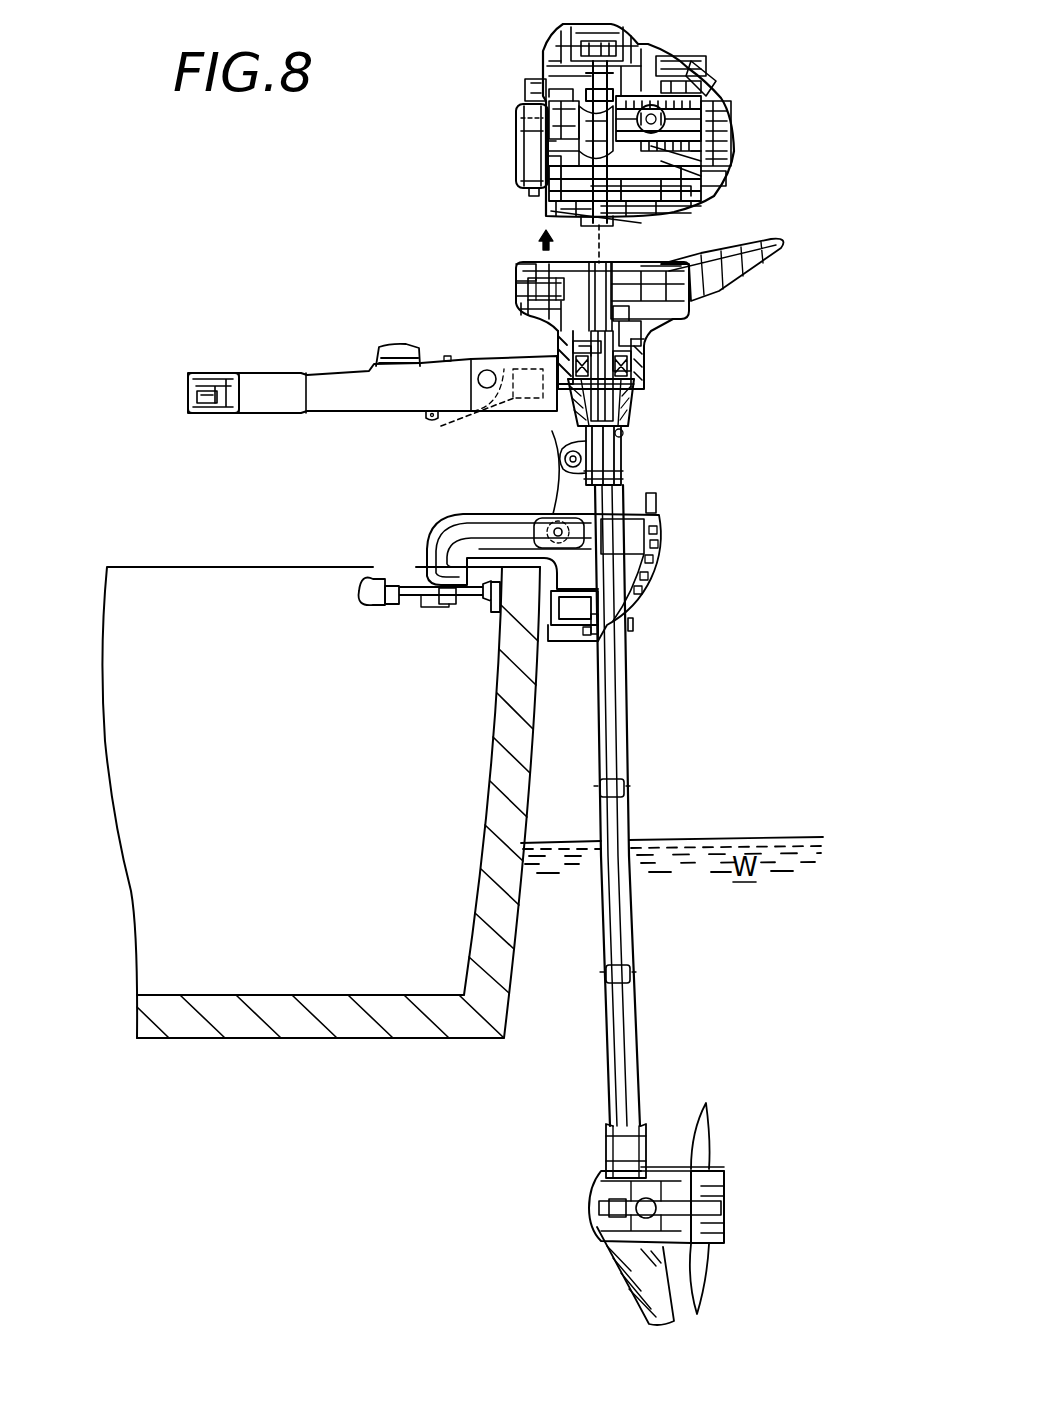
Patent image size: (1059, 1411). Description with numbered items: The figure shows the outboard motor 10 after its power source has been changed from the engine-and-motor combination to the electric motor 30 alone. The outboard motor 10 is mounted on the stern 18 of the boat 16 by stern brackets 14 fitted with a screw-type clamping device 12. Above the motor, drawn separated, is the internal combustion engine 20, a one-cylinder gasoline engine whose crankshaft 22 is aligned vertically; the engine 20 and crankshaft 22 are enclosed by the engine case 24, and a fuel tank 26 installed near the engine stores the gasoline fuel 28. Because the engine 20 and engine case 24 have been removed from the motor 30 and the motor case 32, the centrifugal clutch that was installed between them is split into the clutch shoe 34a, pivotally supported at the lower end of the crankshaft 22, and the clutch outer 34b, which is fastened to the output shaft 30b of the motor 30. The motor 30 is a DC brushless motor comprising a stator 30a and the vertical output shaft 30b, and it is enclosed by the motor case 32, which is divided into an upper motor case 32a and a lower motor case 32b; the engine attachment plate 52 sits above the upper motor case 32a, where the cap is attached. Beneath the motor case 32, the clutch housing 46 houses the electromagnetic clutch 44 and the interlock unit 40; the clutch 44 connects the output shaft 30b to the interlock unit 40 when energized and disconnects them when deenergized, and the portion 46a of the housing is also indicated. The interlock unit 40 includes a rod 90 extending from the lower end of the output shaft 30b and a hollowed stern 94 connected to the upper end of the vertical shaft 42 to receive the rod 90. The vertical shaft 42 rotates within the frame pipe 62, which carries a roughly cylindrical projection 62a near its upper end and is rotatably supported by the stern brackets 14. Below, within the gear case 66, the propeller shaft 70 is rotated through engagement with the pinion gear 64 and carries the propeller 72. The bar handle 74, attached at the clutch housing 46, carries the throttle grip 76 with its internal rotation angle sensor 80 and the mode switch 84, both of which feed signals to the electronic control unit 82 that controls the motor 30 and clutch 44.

The outboard motor 10 is at (715, 62).
The screw-type clamping device 12 is at (397, 602).
The stern bracket 14 is at (472, 513).
The boat 16 is at (309, 804).
The stern 18 is at (522, 728).
The internal combustion engine 20 is at (712, 100).
The crankshaft 22 is at (640, 205).
The engine case 24 is at (645, 50).
The fuel tank 26 is at (519, 98).
The gasoline fuel 28 is at (517, 150).
The electric motor 30 is at (690, 292).
The stator 30a is at (532, 261).
The output shaft 30b is at (636, 312).
The motor case 32 is at (445, 292).
The upper motor case 32a is at (527, 277).
The lower motor case 32b is at (520, 306).
The clutch shoe 34a is at (620, 218).
The clutch outer 34b is at (648, 257).
The interlock unit 40 is at (625, 405).
The vertical shaft 42 is at (627, 820).
The electromagnetic clutch 44 is at (630, 365).
The clutch housing 46 is at (645, 398).
The swivel case flange 46a is at (557, 358).
The engine attachment plate 52 is at (742, 248).
The frame pipe 62 is at (630, 742).
The projection 62a is at (563, 470).
The pinion gear 64 is at (606, 1185).
The gear case 66 is at (590, 1207).
The propeller shaft 70 is at (630, 1240).
The propeller 72 is at (702, 1150).
The bar handle 74 is at (342, 425).
The throttle grip 76 is at (218, 370).
The rotation angle sensor 80 is at (214, 410).
The electronic control unit 82 is at (440, 425).
The mode switch 84 is at (385, 348).
The rod 90 is at (568, 443).
The hollowed stern 94 is at (588, 400).